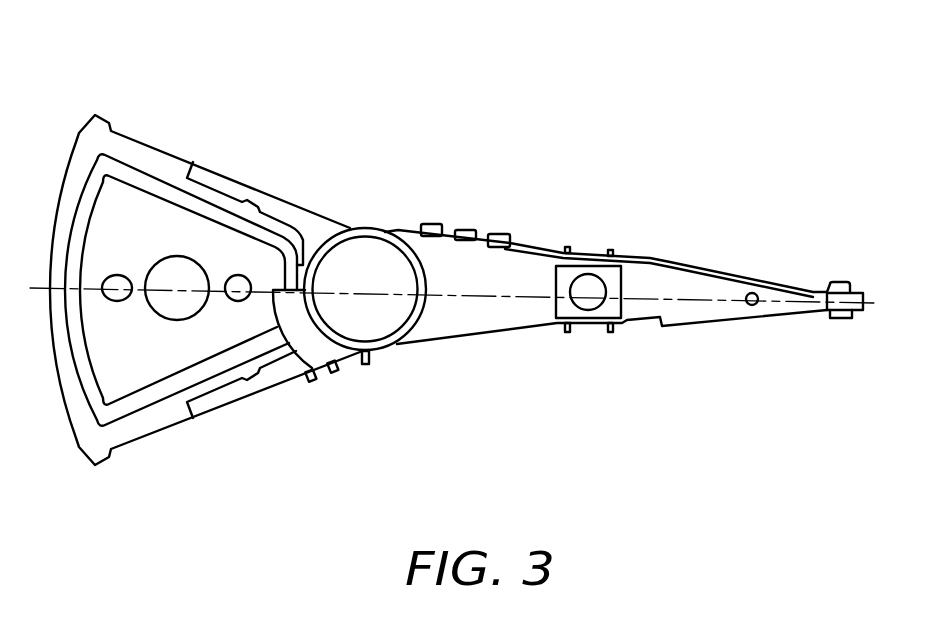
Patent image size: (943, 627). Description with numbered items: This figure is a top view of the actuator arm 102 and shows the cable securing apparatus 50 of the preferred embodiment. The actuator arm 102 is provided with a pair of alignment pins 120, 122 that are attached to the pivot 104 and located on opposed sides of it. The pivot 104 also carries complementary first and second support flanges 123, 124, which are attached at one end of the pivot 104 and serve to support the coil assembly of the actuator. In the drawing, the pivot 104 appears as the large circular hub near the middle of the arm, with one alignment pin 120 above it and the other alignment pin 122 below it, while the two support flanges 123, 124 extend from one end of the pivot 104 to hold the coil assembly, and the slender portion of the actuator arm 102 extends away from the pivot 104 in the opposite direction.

The cable securing apparatus 50 is at (406, 56).
The actuator arm 102 is at (468, 228).
The pivot 104 is at (425, 344).
The alignment pin 120 is at (383, 216).
The alignment pin 122 is at (378, 378).
The first support flange 123 is at (262, 195).
The second support flange 124 is at (250, 391).